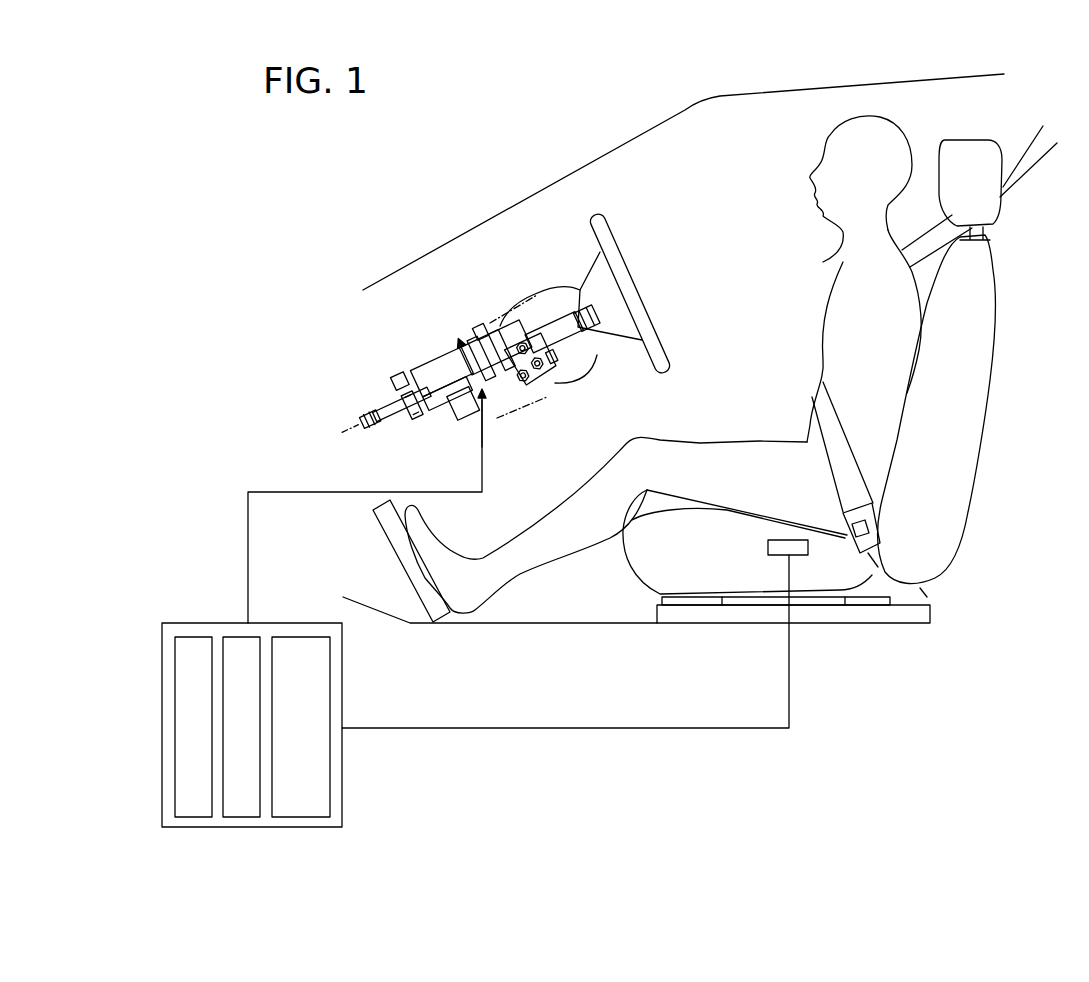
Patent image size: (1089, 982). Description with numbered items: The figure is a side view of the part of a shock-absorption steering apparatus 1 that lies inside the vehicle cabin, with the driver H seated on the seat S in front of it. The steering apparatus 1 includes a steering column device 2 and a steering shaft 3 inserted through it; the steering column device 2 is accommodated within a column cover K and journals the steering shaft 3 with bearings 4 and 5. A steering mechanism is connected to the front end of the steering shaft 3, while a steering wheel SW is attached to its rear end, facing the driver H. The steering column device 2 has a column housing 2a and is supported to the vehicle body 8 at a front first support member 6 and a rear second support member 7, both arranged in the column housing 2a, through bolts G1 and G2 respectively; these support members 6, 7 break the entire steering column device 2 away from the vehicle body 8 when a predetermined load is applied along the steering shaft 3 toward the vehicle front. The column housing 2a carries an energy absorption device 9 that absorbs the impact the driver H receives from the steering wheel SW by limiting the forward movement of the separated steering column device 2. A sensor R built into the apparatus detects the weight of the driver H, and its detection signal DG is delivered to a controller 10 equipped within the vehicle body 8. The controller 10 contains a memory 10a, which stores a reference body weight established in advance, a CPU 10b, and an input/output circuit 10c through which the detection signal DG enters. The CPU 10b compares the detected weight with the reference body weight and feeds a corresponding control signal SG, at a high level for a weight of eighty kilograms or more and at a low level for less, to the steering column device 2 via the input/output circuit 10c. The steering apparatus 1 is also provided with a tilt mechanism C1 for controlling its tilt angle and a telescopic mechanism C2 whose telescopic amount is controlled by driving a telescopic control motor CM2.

The shock-absorption steering apparatus 1 is at (470, 258).
The steering column device 2 is at (543, 304).
The column housing 2a is at (438, 403).
The steering shaft 3 is at (385, 425).
The bearing 4 is at (412, 420).
The bearing 5 is at (580, 333).
The first support member 6 is at (378, 396).
The second support member 7 is at (498, 317).
The vehicle body 8 is at (415, 336).
The energy absorption device 9 is at (457, 340).
The controller 10 is at (285, 744).
The memory 10a is at (195, 817).
The CPU 10b is at (245, 817).
The input/output circuit 10c is at (305, 817).
The tilt mechanism C1 is at (527, 374).
The telescopic mechanism C2 is at (482, 447).
The telescopic control motor CM2 is at (458, 414).
The detection signal DG is at (565, 641).
The bolt G1 is at (392, 375).
The bolt G2 is at (482, 330).
The driver H is at (890, 132).
The column cover K is at (547, 283).
The sensor R is at (768, 546).
The seat S is at (987, 268).
The control signal SG is at (367, 506).
The steering wheel SW is at (603, 228).